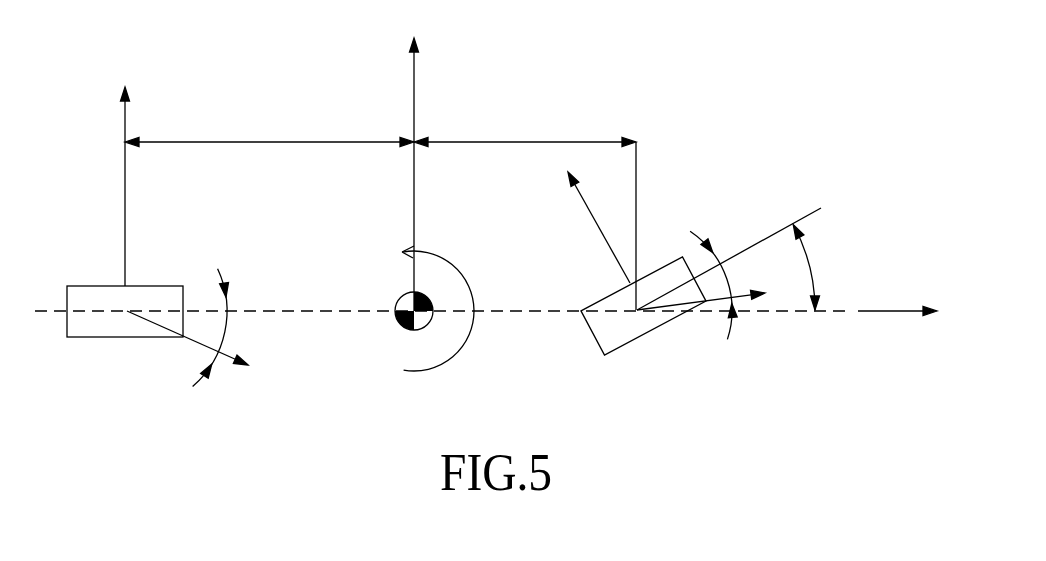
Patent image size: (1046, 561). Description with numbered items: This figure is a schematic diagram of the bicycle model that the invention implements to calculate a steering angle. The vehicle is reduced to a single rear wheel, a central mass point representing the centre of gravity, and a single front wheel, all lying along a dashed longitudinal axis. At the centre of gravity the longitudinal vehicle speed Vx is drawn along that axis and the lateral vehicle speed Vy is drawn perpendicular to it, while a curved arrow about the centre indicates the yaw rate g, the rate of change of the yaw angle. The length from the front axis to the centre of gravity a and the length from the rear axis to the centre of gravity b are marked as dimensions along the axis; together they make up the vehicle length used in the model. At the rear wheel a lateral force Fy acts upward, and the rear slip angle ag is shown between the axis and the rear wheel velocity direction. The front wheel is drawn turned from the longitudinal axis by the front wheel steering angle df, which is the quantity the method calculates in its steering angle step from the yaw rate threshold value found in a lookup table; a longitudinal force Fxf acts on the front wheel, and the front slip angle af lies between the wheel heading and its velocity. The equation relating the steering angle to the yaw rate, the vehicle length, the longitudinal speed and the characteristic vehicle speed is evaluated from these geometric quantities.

The longitudinal vehicle speed Vx is at (897, 294).
The lateral vehicle speed Vy is at (437, 174).
The rear lateral force F_yr Fy is at (125, 192).
The front longitudinal force F_xf Fxf is at (585, 227).
The length from front axis to centre of gravity a is at (525, 129).
The length from rear axis to centre of gravity b is at (269, 129).
The yaw rate g is at (438, 307).
The rear slip angle alpha_r ag is at (190, 328).
The front slip angle alpha_f af is at (701, 273).
The front wheel steering angle df is at (711, 248).